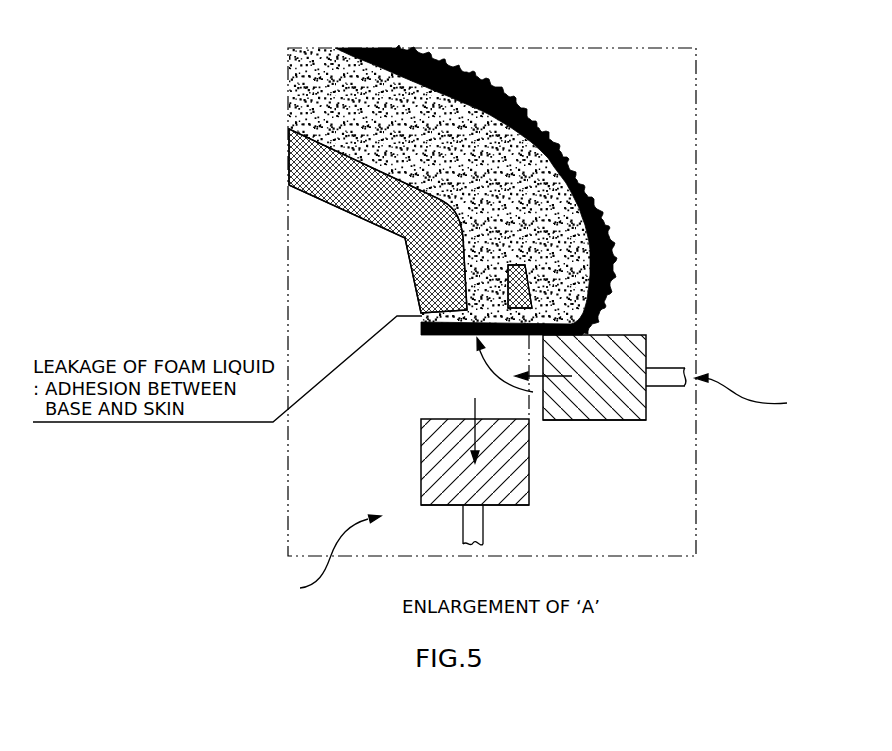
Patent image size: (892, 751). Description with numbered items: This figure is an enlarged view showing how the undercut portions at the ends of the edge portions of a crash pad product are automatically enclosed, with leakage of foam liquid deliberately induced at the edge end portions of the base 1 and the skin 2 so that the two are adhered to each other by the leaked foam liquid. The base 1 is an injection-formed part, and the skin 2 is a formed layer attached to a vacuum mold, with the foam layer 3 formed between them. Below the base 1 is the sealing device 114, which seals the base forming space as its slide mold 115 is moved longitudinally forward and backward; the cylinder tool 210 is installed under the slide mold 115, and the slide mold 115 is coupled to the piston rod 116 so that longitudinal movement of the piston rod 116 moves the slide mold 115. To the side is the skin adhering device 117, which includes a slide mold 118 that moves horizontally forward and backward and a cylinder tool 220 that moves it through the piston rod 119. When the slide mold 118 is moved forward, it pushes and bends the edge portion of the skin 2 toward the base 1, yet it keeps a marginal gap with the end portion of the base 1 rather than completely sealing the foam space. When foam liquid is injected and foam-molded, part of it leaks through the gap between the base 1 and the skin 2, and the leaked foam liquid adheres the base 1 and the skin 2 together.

The base 1 is at (292, 187).
The skin 2 is at (487, 90).
The foam layer 3 is at (308, 96).
The sealing device 114 is at (392, 489).
The slide mold 115 is at (421, 505).
The piston rod 116 is at (482, 522).
The skin adhering device 117 is at (672, 426).
The slide mold 118 is at (630, 337).
The piston rod 119 is at (667, 366).
The cylinder tool 210 is at (324, 558).
The cylinder tool 220 is at (754, 393).